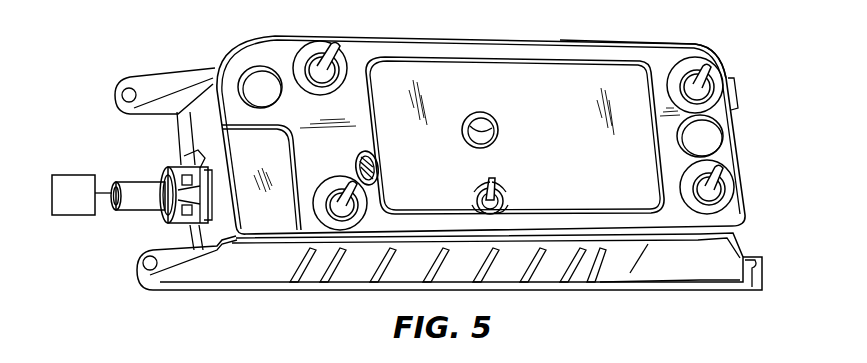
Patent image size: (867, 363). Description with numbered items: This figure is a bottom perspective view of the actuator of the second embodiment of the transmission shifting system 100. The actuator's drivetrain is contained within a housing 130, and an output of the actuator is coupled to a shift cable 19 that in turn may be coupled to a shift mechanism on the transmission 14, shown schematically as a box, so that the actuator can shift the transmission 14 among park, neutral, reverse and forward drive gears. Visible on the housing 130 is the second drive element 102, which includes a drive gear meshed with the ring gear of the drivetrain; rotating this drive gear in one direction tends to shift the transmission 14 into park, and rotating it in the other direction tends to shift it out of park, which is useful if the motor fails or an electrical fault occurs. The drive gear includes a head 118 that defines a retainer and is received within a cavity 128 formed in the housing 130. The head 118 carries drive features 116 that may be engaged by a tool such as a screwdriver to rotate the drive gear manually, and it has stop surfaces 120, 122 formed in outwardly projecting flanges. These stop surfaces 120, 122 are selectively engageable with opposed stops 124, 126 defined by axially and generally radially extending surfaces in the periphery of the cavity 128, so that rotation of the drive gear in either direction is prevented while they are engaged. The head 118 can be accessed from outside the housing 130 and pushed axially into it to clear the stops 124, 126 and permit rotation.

The transmission shifting system 100 is at (94, 87).
The transmission 14 is at (70, 186).
The shift cable 19 is at (102, 191).
The housing 130 is at (622, 48).
The cavity 128 is at (497, 182).
The second drive element 102 is at (500, 185).
The drive features 116 is at (477, 206).
The head 118 is at (506, 202).
The stop surface 120 is at (440, 176).
The stop 124 is at (484, 193).
The stop surface 122 is at (561, 182).
The stop 126 is at (506, 186).